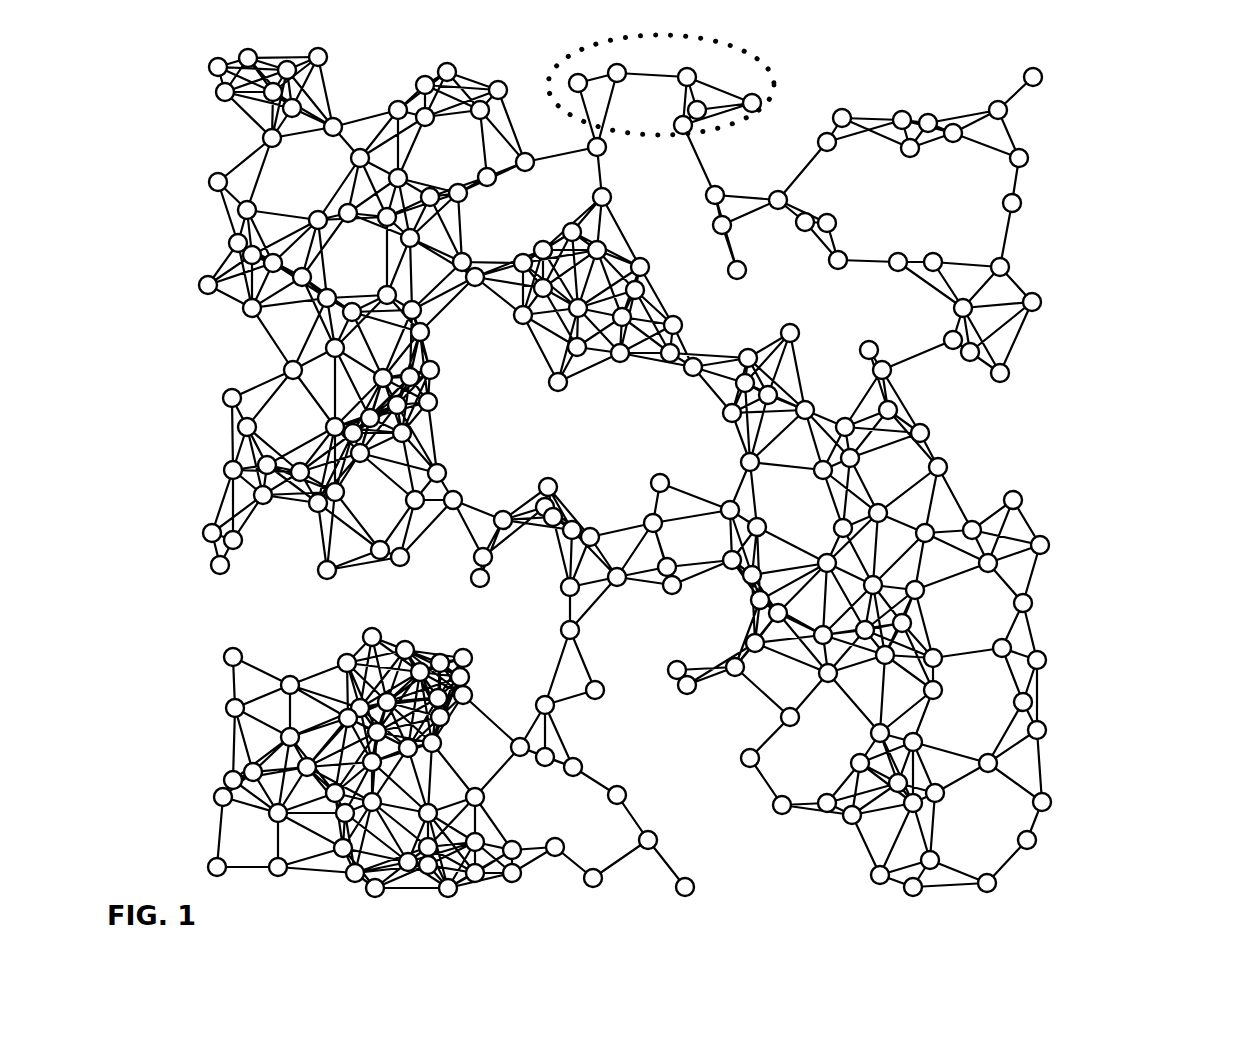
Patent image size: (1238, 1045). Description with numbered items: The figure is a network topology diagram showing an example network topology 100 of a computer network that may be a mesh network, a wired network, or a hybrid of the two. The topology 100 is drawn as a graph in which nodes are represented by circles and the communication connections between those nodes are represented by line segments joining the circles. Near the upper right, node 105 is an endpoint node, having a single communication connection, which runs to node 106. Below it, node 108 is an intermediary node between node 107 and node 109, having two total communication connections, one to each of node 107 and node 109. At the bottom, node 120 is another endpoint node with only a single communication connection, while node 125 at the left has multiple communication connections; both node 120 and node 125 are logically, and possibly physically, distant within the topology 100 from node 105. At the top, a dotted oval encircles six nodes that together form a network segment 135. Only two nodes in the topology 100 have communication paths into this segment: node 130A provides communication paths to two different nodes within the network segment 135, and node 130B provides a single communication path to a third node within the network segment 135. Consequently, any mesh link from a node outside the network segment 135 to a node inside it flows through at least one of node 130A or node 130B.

The network topology 100 is at (1163, 84).
The node 105 is at (1030, 66).
The node 106 is at (997, 100).
The node 107 is at (1028, 163).
The node 108 is at (1021, 201).
The node 109 is at (1009, 263).
The node 120 is at (695, 882).
The node 125 is at (226, 390).
The node 130A is at (606, 149).
The node 130B is at (706, 196).
The network segment 135 is at (756, 52).